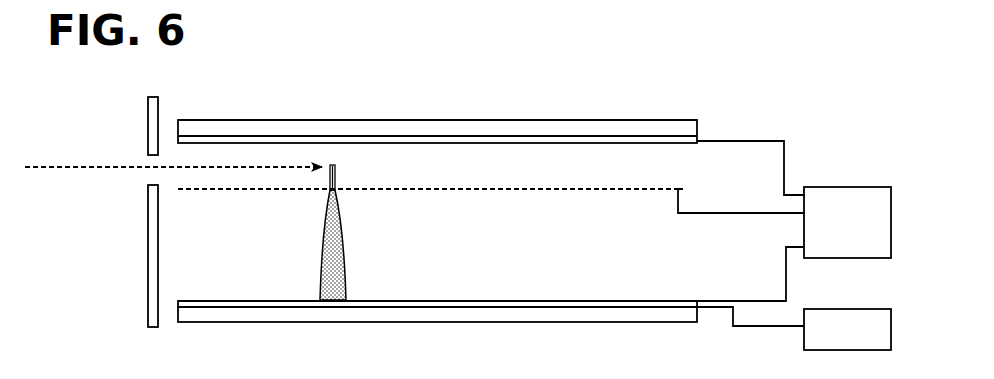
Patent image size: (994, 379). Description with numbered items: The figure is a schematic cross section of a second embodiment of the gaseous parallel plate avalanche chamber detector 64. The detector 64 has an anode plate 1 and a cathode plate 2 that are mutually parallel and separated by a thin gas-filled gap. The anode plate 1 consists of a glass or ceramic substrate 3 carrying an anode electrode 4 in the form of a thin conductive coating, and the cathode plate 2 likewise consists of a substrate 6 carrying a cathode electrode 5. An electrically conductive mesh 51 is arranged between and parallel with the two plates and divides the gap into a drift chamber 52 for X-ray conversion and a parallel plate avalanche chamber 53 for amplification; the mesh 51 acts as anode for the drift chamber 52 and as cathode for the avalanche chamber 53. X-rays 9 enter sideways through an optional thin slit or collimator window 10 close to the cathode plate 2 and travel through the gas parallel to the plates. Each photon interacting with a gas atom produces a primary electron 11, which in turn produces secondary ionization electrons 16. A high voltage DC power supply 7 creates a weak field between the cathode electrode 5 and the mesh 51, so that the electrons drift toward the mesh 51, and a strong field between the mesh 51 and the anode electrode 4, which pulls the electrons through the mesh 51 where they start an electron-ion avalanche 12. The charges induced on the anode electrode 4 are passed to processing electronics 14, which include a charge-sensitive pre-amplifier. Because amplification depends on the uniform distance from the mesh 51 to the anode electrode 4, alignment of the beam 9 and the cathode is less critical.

The anode plate 1 is at (597, 329).
The cathode plate 2 is at (598, 114).
The substrate 3 is at (632, 320).
The anode electrode 4 is at (602, 299).
The cathode electrode 5 is at (741, 211).
The substrate 6 is at (636, 128).
The high voltage DC power supply 7 is at (839, 235).
The X-rays 9 is at (99, 163).
The collimator window 10 is at (147, 142).
The primary electron 11 is at (339, 161).
The avalanche 12 is at (342, 246).
The processing electronics 14 is at (832, 342).
The secondary ionization electrons 16 is at (339, 173).
The mesh 51 is at (418, 193).
The drift chamber 52 is at (527, 168).
The parallel plate avalanche chamber 53 is at (523, 244).
The detector 64 is at (422, 103).